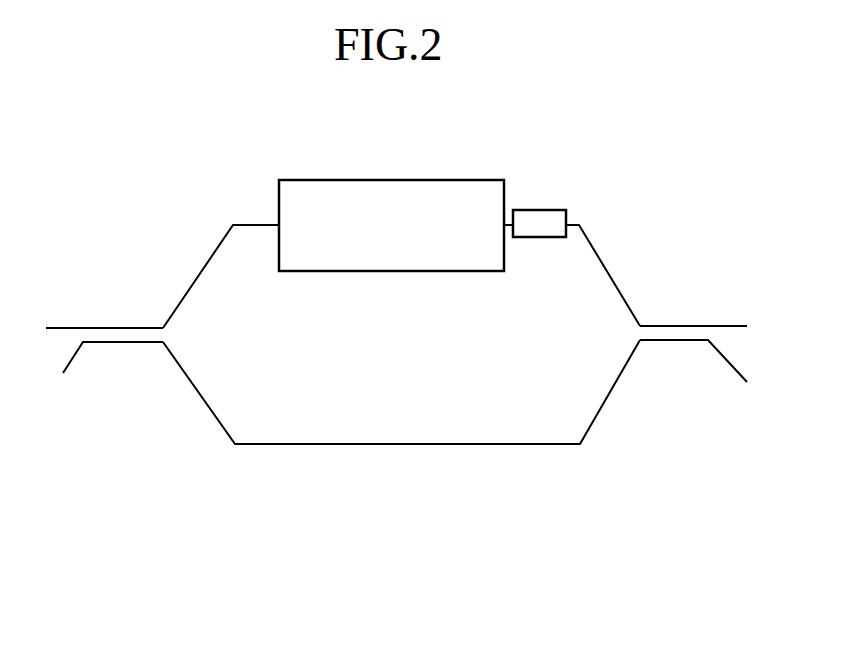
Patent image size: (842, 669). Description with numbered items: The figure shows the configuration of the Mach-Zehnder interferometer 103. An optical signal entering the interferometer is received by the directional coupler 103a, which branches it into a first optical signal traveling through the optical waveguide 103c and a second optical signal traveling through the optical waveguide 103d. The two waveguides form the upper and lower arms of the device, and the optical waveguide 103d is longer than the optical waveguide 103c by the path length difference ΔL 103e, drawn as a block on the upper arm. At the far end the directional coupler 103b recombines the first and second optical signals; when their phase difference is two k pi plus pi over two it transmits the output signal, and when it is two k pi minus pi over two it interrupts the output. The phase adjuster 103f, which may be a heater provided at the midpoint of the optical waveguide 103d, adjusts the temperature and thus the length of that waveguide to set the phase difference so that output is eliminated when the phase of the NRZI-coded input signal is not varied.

The Mach-Zehnder interferometer 103 is at (183, 142).
The directional coupler 103a is at (130, 343).
The directional coupler 103b is at (683, 341).
The optical waveguide 103c is at (410, 445).
The optical waveguide 103d is at (253, 225).
The ΔL 103e is at (383, 180).
The phase adjuster 103f is at (533, 210).